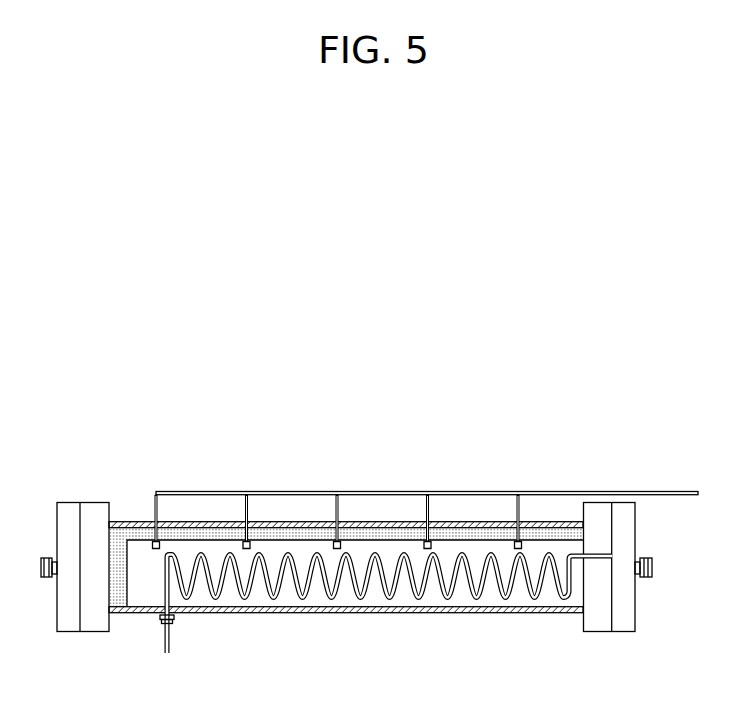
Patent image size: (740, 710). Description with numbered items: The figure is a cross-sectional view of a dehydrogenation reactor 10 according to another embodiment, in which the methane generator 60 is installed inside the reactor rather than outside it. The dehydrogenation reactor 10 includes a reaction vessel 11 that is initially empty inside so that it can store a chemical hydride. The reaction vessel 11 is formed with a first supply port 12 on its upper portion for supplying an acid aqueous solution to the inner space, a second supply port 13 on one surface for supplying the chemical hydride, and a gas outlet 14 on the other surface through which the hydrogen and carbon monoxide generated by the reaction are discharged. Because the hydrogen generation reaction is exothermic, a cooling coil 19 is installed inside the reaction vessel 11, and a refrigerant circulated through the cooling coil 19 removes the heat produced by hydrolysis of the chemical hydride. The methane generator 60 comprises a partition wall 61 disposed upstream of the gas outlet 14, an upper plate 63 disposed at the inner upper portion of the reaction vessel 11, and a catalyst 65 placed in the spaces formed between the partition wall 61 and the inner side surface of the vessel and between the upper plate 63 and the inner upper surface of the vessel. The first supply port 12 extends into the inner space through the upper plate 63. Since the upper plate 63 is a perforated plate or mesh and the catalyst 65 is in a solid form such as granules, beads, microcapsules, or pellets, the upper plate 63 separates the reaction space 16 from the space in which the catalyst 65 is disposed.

The dehydrogenation reactor 10 is at (380, 418).
The reaction vessel 11 is at (320, 614).
The first supply port 12 is at (518, 514).
The second supply port 13 is at (648, 580).
The gas outlet 14 is at (46, 578).
The reaction space 16 is at (468, 601).
The cooling coil 19 is at (503, 601).
The methane generator 60 is at (238, 425).
The partition wall 61 is at (128, 552).
The upper plate 63 is at (172, 527).
The catalyst 65 is at (110, 569).